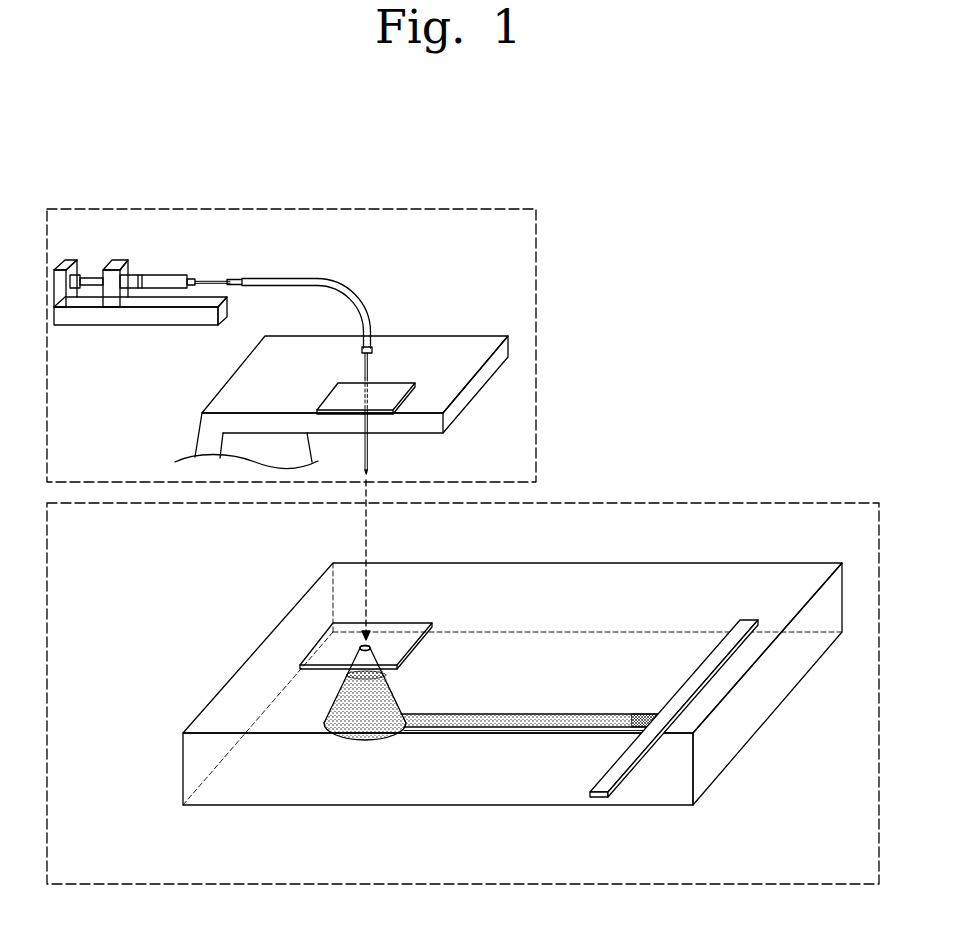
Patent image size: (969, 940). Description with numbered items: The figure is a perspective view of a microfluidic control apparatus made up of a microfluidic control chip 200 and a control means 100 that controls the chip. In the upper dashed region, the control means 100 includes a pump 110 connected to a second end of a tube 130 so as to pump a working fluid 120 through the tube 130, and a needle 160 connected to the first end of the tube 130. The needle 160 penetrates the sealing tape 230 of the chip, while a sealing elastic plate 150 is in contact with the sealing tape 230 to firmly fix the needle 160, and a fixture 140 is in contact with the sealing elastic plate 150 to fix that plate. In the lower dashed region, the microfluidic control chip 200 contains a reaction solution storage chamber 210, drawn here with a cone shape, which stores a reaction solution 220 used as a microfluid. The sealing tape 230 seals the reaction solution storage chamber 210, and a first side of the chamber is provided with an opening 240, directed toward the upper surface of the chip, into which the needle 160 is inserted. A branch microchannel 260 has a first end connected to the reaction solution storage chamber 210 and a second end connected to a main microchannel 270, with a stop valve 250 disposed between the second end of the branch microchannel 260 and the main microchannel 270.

The control means 100 is at (485, 209).
The pump 110 is at (140, 314).
The working fluid 120 is at (285, 280).
The tube 130 is at (345, 281).
The fixture 140 is at (427, 347).
The sealing elastic plate 150 is at (337, 394).
The needle 160 is at (369, 453).
The microfluidic control chip 200 is at (832, 503).
The reaction solution storage chamber 210 is at (332, 705).
The reaction solution 220 is at (345, 720).
The sealing tape 230 is at (333, 642).
The opening 240 is at (368, 644).
The stop valve 250 is at (643, 714).
The branch microchannel 260 is at (518, 714).
The main microchannel 270 is at (715, 655).